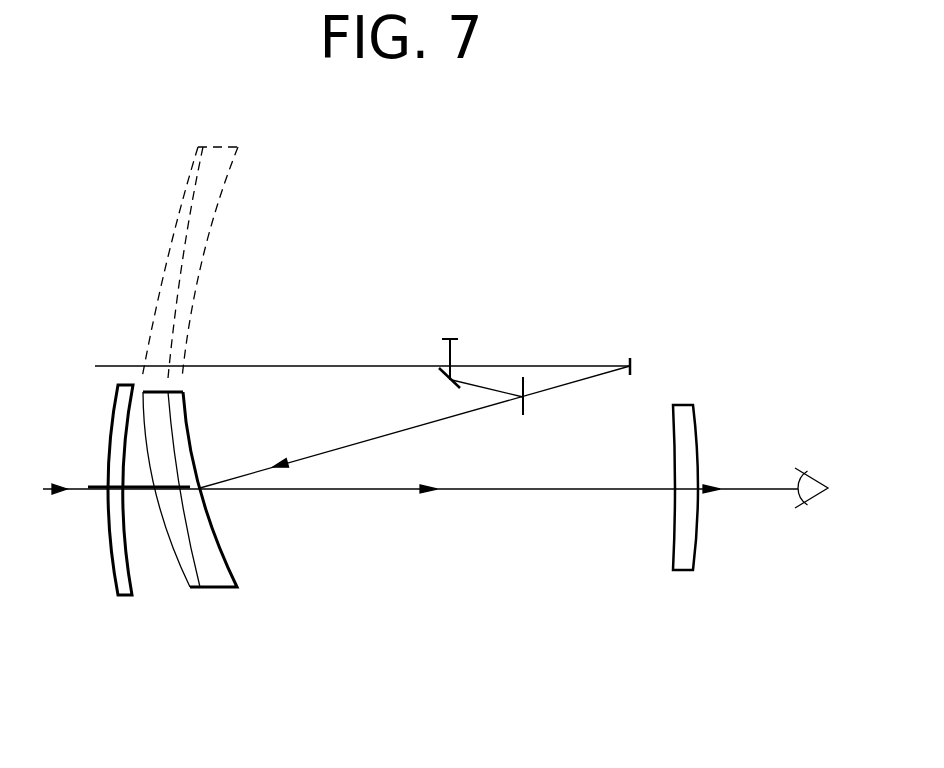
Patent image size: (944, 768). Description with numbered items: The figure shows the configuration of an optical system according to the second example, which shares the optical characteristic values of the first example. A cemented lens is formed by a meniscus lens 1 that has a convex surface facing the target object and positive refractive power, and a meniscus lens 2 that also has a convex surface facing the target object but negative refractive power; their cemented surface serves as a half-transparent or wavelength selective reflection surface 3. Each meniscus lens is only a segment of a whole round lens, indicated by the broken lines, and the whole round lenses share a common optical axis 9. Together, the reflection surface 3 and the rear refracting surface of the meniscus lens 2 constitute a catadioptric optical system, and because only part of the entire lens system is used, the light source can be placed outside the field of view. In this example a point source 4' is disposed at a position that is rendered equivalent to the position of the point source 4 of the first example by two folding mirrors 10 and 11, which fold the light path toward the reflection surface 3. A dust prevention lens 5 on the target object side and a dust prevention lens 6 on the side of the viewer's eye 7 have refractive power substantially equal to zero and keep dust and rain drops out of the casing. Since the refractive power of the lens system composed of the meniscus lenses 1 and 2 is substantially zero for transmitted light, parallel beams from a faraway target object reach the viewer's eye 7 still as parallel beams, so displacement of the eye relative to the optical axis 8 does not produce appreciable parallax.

The meniscus lens 1 is at (181, 571).
The meniscus lens 2 is at (229, 588).
The half-transparent reflection surface 3 is at (200, 573).
The point source 4 is at (671, 353).
The point source 4' is at (465, 326).
The dust prevention lens 5 is at (122, 597).
The dust prevention lens 6 is at (682, 573).
The viewer's eye 7 is at (817, 500).
The optical axis 8 is at (103, 490).
The optical axis 9 is at (289, 366).
The folding mirror 10 is at (458, 387).
The folding mirror 11 is at (526, 412).